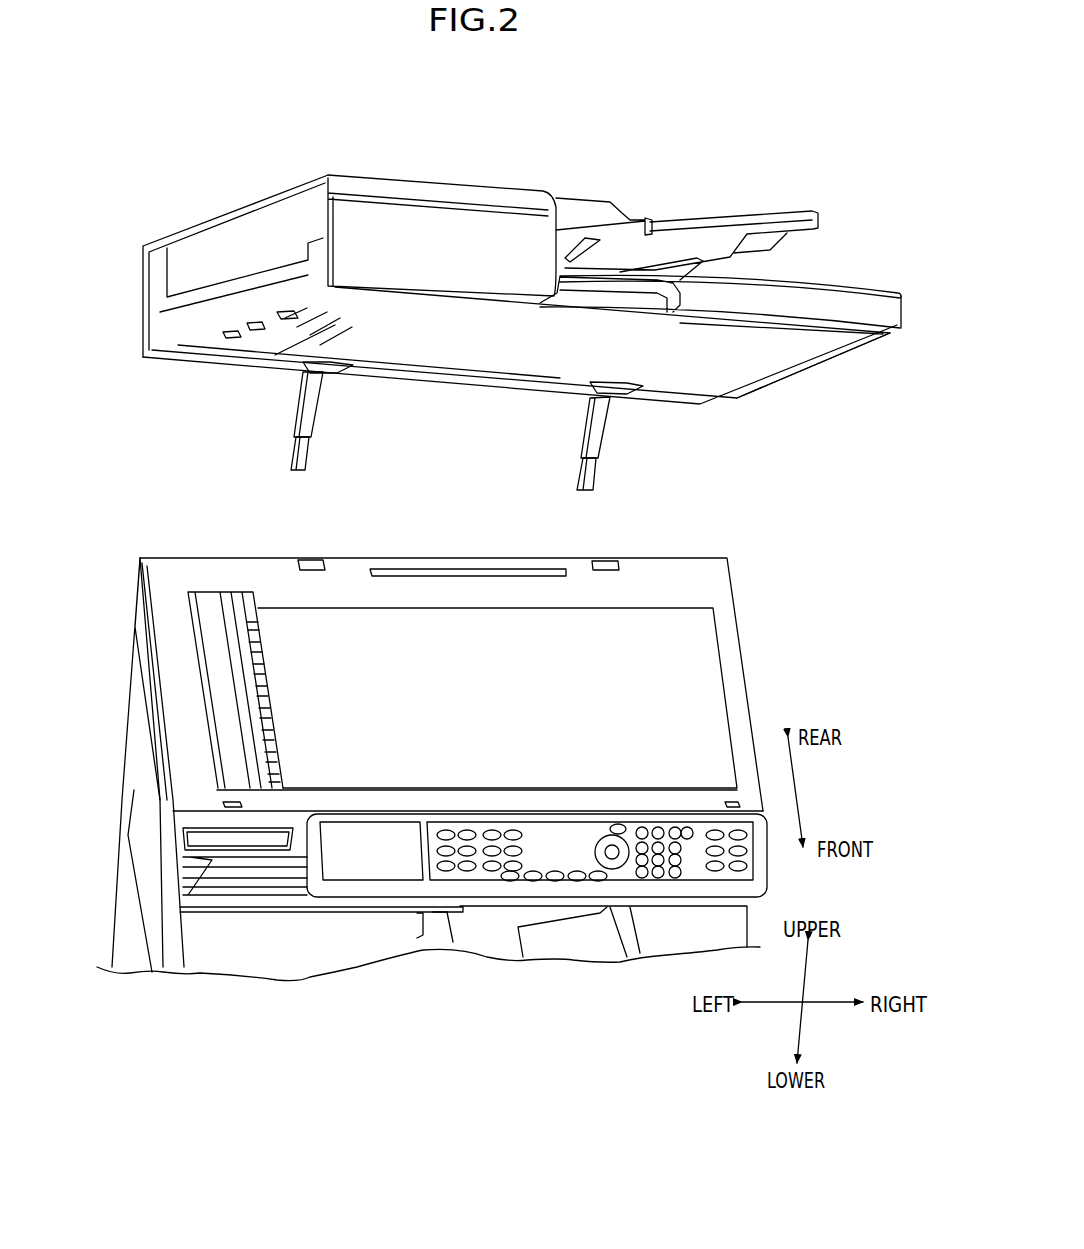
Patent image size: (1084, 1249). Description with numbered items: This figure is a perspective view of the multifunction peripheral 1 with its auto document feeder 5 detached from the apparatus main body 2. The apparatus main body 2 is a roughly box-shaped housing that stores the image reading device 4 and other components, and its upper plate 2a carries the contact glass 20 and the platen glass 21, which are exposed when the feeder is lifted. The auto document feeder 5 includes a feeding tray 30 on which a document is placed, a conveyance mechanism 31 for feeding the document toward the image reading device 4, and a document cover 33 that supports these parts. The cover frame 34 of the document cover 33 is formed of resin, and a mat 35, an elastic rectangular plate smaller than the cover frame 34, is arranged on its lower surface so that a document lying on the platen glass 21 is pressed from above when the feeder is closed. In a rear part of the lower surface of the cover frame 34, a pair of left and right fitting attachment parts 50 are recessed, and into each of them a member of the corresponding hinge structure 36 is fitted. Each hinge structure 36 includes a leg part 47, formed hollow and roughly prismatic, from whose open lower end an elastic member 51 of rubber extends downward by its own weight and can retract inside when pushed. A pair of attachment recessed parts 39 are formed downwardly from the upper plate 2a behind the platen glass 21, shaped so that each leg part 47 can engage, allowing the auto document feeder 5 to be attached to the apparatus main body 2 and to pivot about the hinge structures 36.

The multifunction peripheral 1 is at (848, 516).
The apparatus main body 2 is at (483, 744).
The upper plate 2a is at (720, 580).
The image reading device 4 is at (137, 585).
The auto document feeder 5 is at (563, 150).
The contact glass 20 is at (211, 612).
The platen glass 21 is at (707, 645).
The feeding tray 30 is at (773, 220).
The conveyance mechanism 31 is at (423, 187).
The document cover 33 is at (866, 285).
The cover frame 34 is at (884, 335).
The mat 35 is at (780, 357).
The hinge structure 36 is at (410, 431).
The attachment recessed part 39 is at (325, 560).
The leg part 47 is at (302, 392).
The fitting attachment part 50 is at (340, 373).
The elastic member 51 is at (292, 460).